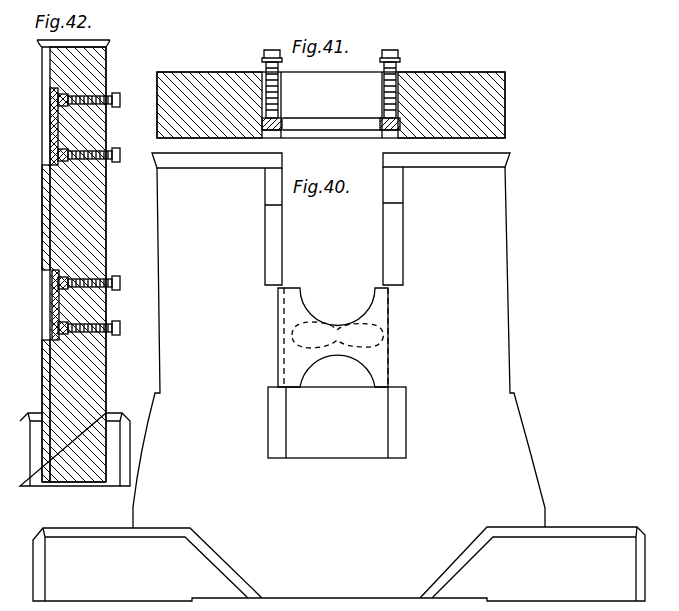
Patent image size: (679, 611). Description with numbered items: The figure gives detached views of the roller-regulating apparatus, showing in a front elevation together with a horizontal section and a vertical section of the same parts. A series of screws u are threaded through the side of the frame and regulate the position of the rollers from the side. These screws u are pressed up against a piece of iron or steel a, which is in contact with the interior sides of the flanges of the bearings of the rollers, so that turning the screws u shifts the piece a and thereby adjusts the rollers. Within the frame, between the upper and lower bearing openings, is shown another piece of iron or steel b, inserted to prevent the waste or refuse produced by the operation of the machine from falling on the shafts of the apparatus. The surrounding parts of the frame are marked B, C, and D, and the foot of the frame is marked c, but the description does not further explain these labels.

In FIG. 40, the piece of iron or steel a is at (337, 357).
In FIG. 42, the piece of iron or steel a is at (50, 214).
In FIG. 40, the piece of iron or steel b is at (337, 335).
In FIG. 40, the base c is at (406, 602).
In FIG. 42, the base c is at (75, 449).
In FIG. 41, the screws u is at (331, 83).
In FIG. 42, the screws u is at (95, 214).
In FIG. 40, the block B is at (393, 155).
In FIG. 41, the block B is at (331, 105).
In FIG. 42, the block B is at (73, 261).
In FIG. 40, the frame side C is at (153, 225).
In FIG. 40, the housing D is at (516, 225).